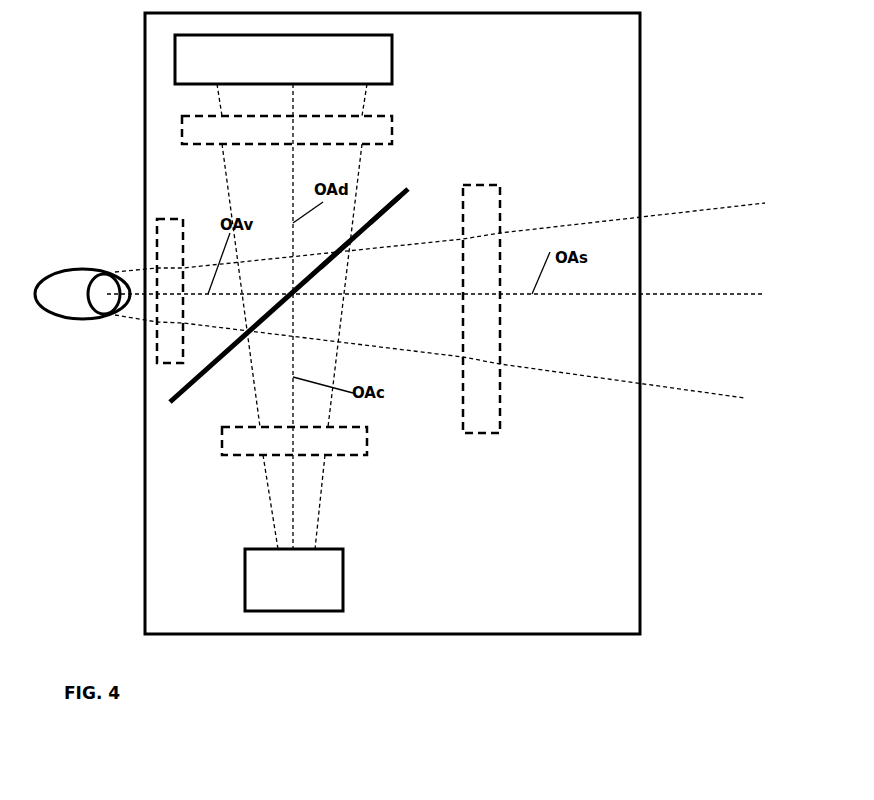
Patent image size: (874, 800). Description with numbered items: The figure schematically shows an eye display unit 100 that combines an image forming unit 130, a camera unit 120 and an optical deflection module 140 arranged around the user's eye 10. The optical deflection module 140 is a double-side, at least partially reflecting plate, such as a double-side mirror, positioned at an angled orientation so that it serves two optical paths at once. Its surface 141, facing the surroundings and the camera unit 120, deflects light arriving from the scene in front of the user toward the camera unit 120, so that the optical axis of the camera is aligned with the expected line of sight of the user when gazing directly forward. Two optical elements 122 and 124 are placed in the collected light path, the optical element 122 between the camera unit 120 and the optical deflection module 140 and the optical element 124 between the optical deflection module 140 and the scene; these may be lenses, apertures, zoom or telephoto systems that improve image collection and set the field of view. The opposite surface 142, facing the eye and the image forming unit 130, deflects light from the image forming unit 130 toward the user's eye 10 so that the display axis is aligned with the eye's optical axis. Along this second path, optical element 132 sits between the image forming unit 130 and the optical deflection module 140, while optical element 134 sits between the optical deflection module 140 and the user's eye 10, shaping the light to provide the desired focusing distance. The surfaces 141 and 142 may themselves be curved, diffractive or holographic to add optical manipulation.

The user's eye 10 is at (52, 308).
The eye display unit 100 is at (392, 323).
The camera unit 120 is at (294, 580).
The optical element 122 is at (232, 440).
The optical element 124 is at (483, 428).
The image forming unit 130 is at (283, 59).
The optical element 132 is at (392, 130).
The optical element 134 is at (175, 225).
The optical deflection module 140 is at (215, 372).
The surface 141 is at (333, 263).
The surface 142 is at (382, 208).